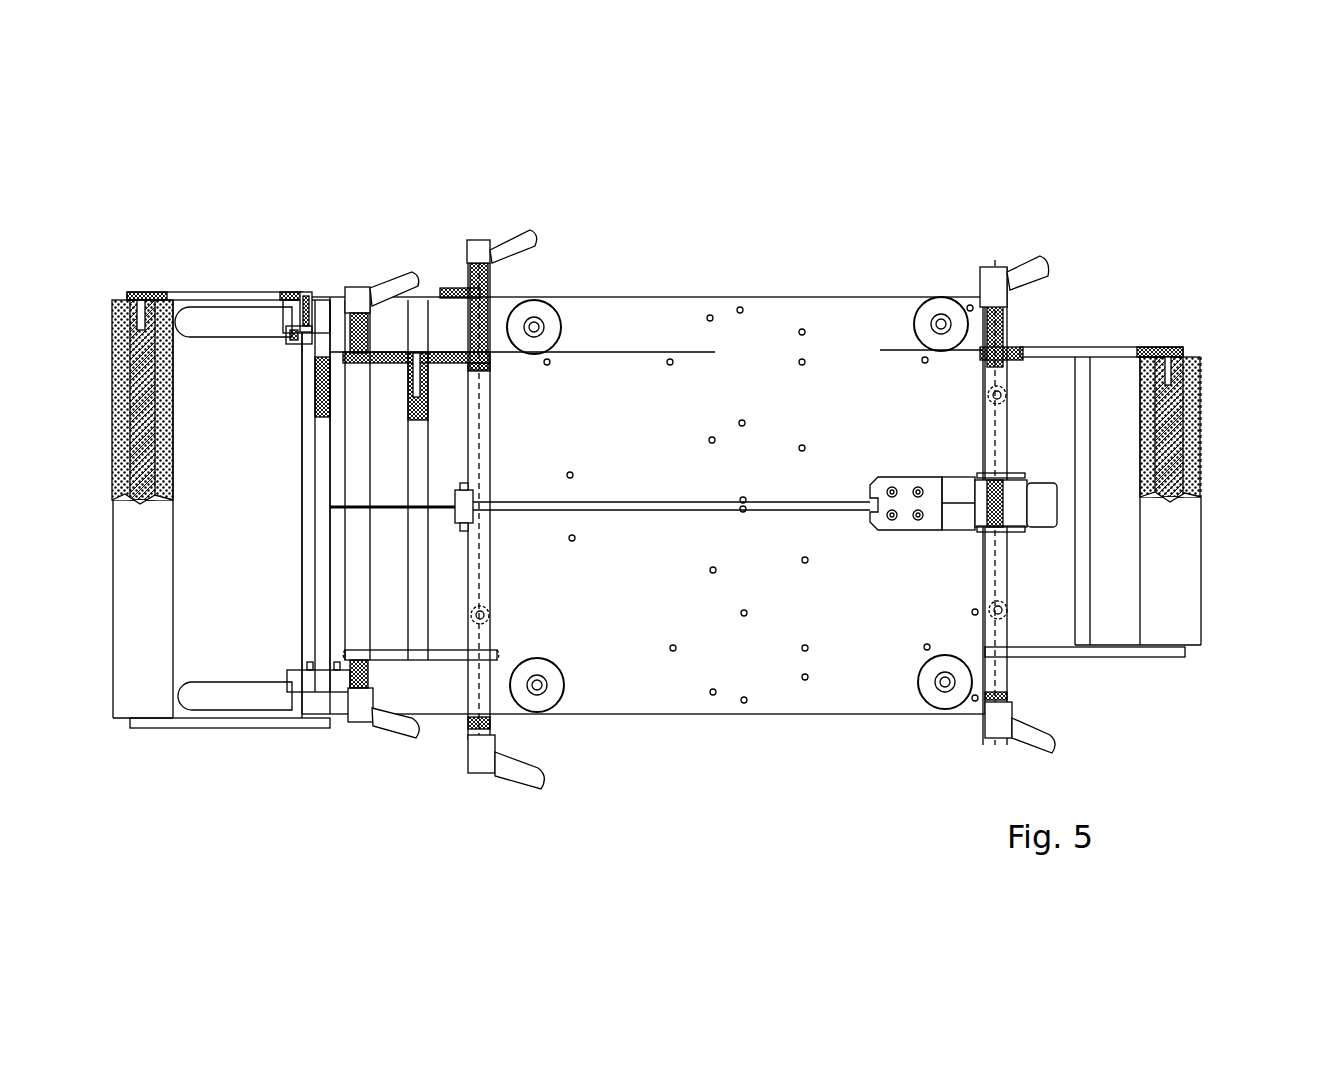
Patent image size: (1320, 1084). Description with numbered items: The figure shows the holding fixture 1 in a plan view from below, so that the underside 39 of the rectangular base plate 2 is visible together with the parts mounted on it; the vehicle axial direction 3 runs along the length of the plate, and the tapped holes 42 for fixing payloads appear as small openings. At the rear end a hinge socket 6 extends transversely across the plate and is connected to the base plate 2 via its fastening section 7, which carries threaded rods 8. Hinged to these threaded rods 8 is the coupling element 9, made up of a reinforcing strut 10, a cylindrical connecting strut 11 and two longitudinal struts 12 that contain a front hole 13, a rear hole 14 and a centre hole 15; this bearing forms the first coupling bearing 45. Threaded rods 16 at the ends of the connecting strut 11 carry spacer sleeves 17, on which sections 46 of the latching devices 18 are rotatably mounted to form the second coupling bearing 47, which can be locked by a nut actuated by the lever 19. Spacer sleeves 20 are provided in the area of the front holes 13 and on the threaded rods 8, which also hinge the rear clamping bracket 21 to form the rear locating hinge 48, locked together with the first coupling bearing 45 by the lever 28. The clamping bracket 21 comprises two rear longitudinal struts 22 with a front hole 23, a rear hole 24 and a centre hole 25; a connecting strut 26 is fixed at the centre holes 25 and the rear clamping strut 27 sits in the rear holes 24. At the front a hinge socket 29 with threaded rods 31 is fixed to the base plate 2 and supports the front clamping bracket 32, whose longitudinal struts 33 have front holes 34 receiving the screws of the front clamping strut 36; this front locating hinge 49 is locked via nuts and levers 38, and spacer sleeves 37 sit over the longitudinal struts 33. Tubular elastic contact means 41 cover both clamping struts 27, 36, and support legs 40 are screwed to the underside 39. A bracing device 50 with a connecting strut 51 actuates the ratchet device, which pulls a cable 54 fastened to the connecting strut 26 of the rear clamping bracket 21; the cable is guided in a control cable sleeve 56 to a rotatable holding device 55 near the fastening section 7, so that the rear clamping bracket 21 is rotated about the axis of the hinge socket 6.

The holding fixture 1 is at (703, 258).
The base plate 2 is at (820, 546).
The vehicle axial direction 3 is at (728, 831).
The hinge socket 6 is at (500, 452).
The fastening section 7 is at (492, 487).
The threaded rod 8 is at (488, 310).
The coupling element 9 is at (433, 542).
The reinforcing strut 10 is at (428, 480).
The connecting strut 11 is at (368, 484).
The longitudinal strut 12 is at (437, 352).
The front hole 13 is at (492, 367).
The rear hole 14 is at (370, 366).
The centre hole 15 is at (413, 353).
The threaded rod 16 is at (340, 318).
The spacer sleeve 17 is at (313, 377).
The latching device 18 is at (228, 327).
The lever 19 is at (390, 290).
The spacer sleeve 20 is at (489, 330).
The clamping bracket 21 is at (162, 551).
The rear longitudinal strut 22 is at (188, 292).
The front hole 23 is at (467, 292).
The rear hole 24 is at (141, 295).
The centre hole 25 is at (297, 300).
The connecting strut 26 is at (300, 486).
The rear clamping strut 27 is at (142, 450).
The lever 28 is at (512, 240).
The front hinge socket 29 is at (985, 430).
The threaded rod 31 is at (1012, 350).
The front clamping bracket 32 is at (1204, 626).
The longitudinal strut 33 is at (1130, 347).
The front hole 34 is at (1180, 352).
The front clamping strut 36 is at (1196, 400).
The spacer sleeve 37 is at (985, 335).
The lever 38 is at (1042, 262).
The underside 39 is at (830, 688).
The support leg 40 is at (545, 318).
The contact means 41 is at (160, 486).
The hole 42 is at (745, 422).
The first coupling bearing 45 is at (492, 357).
The section 46 is at (287, 342).
The second coupling bearing 47 is at (353, 313).
The rear locating hinge 48 is at (489, 290).
The front locating hinge 49 is at (980, 365).
The bracing device 50 is at (877, 530).
The connecting strut 51 is at (1084, 520).
The cable 54 is at (380, 510).
The holding device 55 is at (472, 515).
The control cable sleeve 56 is at (623, 510).